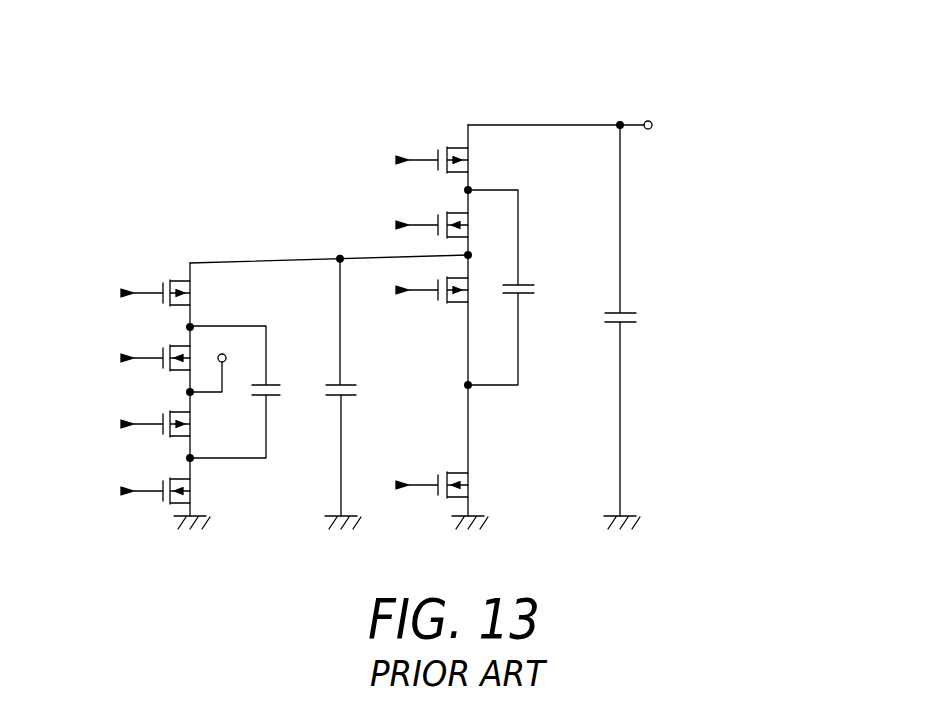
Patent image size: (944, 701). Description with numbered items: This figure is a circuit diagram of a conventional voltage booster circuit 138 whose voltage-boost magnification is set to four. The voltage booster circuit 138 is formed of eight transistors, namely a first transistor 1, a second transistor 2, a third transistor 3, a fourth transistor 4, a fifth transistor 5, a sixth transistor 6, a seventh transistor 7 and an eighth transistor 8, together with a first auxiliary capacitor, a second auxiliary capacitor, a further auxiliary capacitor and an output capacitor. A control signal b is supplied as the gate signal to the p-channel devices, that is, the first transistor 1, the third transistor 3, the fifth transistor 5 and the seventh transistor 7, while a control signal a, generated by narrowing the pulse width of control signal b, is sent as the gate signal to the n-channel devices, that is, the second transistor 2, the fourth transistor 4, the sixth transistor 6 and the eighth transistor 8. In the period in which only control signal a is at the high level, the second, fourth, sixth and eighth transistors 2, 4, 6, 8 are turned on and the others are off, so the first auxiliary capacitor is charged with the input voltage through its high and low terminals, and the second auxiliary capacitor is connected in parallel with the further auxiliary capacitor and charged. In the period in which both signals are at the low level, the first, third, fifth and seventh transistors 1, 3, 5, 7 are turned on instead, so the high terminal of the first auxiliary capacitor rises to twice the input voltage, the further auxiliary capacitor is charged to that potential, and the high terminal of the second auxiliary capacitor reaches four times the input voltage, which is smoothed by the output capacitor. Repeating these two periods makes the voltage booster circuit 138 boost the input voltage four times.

The voltage booster circuit 138 is at (360, 88).
The transistor Q1 1 is at (176, 281).
The transistor Q2 2 is at (176, 346).
The transistor Q3 3 is at (176, 412).
The transistor Q4 4 is at (176, 479).
The transistor Q5 5 is at (454, 147).
The transistor Q6 6 is at (454, 212).
The transistor Q7 7 is at (455, 303).
The transistor Q8 8 is at (455, 472).